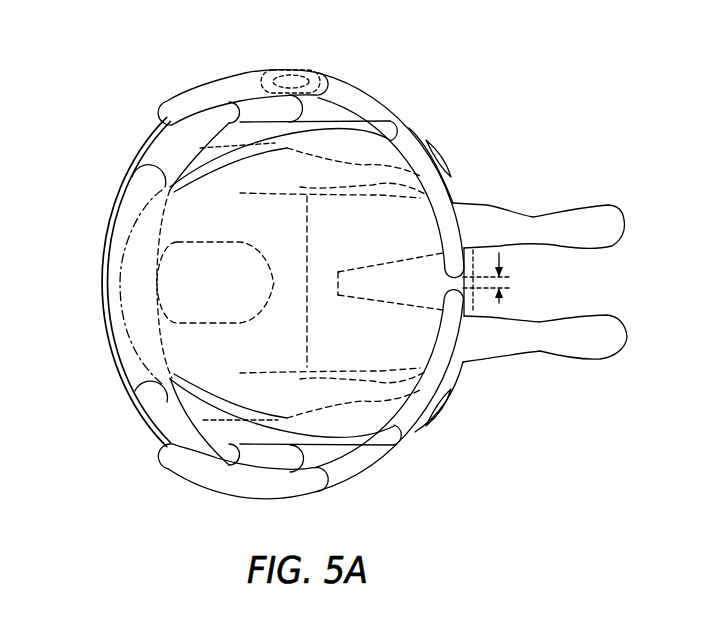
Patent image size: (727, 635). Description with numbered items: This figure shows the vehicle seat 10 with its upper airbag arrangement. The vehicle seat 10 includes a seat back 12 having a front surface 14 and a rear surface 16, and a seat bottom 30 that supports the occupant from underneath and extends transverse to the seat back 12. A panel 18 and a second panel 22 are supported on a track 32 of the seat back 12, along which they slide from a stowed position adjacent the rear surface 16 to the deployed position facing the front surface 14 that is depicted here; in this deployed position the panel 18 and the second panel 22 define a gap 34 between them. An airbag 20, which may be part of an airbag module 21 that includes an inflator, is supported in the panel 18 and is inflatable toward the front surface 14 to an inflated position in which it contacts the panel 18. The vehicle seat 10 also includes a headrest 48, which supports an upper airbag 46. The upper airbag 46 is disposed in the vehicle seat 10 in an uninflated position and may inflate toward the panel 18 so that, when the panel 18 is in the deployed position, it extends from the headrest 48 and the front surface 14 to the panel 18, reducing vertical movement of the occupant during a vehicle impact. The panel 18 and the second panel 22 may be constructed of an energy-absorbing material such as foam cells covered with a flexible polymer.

The vehicle seat 10 is at (82, 73).
The seat back 12 is at (257, 101).
The front surface 14 is at (170, 191).
The rear surface 16 is at (118, 217).
The panel 18 is at (370, 103).
The airbag 20 is at (322, 70).
The airbag module 21 is at (283, 64).
The second panel 22 is at (371, 456).
The seat bottom 30 is at (462, 199).
The track 32 is at (134, 393).
The gap 34 is at (499, 303).
The upper airbag 46 is at (176, 217).
The headrest 48 is at (171, 154).